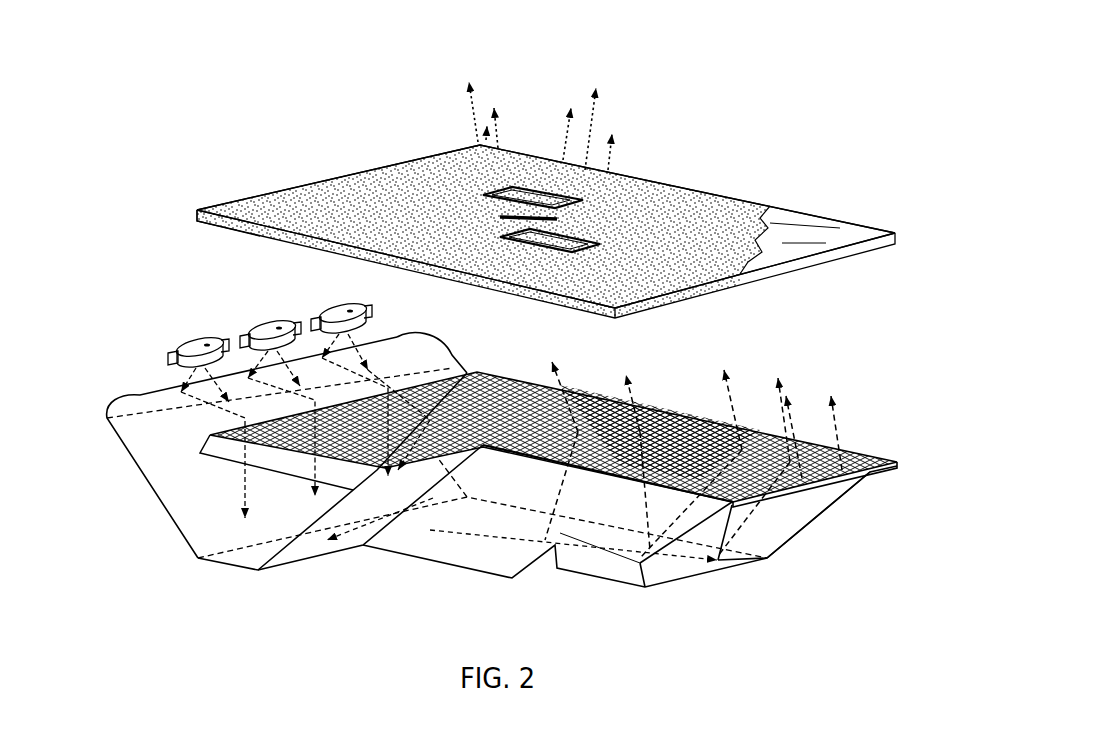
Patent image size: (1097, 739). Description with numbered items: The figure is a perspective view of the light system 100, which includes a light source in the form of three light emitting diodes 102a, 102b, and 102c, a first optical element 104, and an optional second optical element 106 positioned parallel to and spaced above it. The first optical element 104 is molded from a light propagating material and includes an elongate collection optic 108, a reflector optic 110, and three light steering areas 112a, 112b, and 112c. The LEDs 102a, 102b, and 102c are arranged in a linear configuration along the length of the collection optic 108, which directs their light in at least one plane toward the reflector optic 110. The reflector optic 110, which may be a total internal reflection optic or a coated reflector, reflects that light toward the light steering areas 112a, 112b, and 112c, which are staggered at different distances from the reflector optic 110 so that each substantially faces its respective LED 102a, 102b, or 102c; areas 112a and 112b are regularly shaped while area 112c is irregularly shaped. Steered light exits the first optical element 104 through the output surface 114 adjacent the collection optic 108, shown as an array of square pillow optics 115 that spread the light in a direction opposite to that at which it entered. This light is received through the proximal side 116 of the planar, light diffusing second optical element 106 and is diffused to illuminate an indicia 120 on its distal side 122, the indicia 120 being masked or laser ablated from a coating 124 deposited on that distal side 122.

The light system 100 is at (797, 61).
The light emitting diode 102a is at (176, 339).
The light emitting diode 102b is at (264, 319).
The light emitting diode 102c is at (340, 308).
The first optical element 104 is at (515, 490).
The second optical element 106 is at (803, 233).
The collection optic 108 is at (455, 347).
The reflector optic 110 is at (143, 478).
The light steering area 112a is at (302, 547).
The light steering area 112b is at (537, 568).
The light steering area 112c is at (780, 522).
The output surface 114 is at (578, 397).
The pillow optics 115 is at (653, 427).
The proximal side 116 is at (222, 228).
The indicia 120 is at (500, 238).
The distal side 122 is at (277, 205).
The coating 124 is at (722, 208).